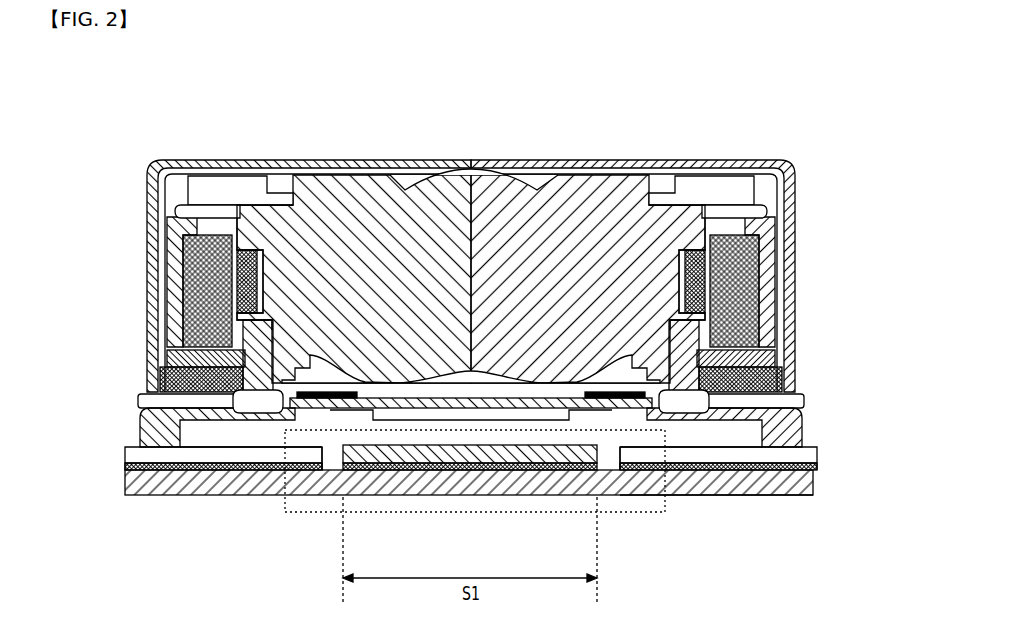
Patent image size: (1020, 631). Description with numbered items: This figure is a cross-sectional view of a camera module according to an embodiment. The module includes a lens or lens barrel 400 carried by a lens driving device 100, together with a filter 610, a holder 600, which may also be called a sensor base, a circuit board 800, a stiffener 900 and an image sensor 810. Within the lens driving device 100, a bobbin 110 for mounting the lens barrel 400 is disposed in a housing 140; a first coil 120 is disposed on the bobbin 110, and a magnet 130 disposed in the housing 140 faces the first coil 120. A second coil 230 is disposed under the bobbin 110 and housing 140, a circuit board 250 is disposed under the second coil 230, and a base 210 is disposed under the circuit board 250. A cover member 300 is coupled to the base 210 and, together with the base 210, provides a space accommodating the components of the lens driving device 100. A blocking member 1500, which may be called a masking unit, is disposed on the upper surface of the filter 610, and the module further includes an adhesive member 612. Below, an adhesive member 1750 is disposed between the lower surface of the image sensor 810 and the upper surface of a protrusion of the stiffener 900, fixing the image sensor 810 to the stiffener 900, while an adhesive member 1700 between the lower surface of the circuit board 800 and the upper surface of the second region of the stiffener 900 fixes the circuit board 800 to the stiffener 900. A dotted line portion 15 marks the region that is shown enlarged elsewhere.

The lens driving device 100 is at (877, 195).
The bobbin 110 is at (782, 228).
The first coil 120 is at (770, 275).
The magnet 130 is at (770, 298).
The housing 140 is at (772, 250).
The base 210 is at (790, 373).
The second coil 230 is at (790, 344).
The circuit board 250 is at (790, 364).
The cover member 300 is at (796, 206).
The lens barrel 400 is at (586, 174).
The holder 600 is at (803, 424).
The filter 610 is at (407, 497).
The adhesive member 612 is at (800, 400).
The circuit board 800 is at (800, 455).
The image sensor 810 is at (578, 497).
The stiffener 900 is at (677, 497).
The blocking member 1500 is at (276, 497).
The adhesive member 1700 is at (734, 497).
The adhesive member 1750 is at (505, 497).
The dotted line portion 15 is at (631, 514).